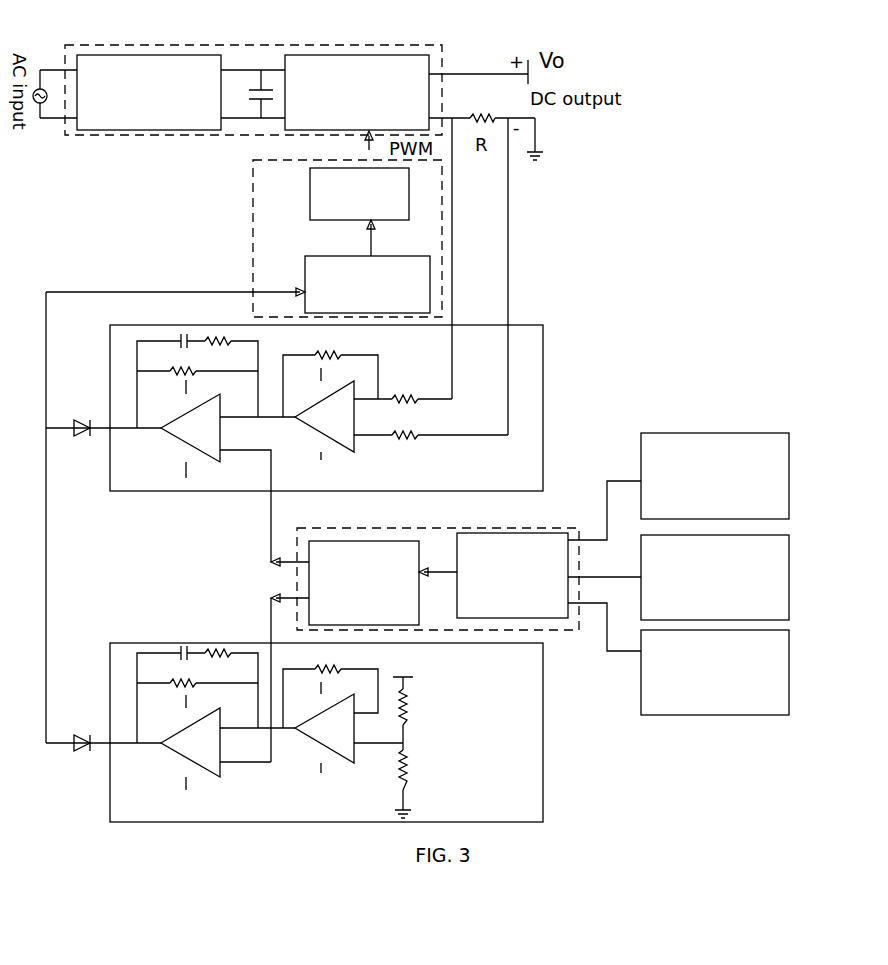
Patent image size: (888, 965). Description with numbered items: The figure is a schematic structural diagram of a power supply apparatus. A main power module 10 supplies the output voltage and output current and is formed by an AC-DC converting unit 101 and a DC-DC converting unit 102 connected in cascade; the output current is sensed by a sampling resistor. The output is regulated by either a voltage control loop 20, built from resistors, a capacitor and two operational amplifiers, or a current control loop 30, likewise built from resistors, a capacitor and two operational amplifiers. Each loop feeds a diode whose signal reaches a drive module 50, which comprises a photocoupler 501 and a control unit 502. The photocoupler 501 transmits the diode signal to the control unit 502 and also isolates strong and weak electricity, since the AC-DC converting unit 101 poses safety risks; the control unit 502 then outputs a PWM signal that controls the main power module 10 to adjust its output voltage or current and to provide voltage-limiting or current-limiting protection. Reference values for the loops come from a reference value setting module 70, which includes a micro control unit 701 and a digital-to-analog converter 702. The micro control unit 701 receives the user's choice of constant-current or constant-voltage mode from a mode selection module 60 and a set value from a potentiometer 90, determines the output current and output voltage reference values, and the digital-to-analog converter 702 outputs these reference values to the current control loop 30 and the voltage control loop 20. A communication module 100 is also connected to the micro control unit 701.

The main power module 10 is at (100, 45).
The AC-DC converting unit 101 is at (165, 55).
The DC-DC converting unit 102 is at (363, 55).
The drive module 50 is at (253, 200).
The photocoupler 501 is at (338, 256).
The control unit 502 is at (345, 168).
The current control loop 30 is at (543, 405).
The voltage control loop 20 is at (543, 757).
The reference value setting module 70 is at (553, 630).
The micro control unit 701 is at (513, 533).
The digital-to-analog converter 702 is at (375, 541).
The communication module 100 is at (789, 470).
The potentiometer 90 is at (789, 580).
The mode selection module 60 is at (789, 680).